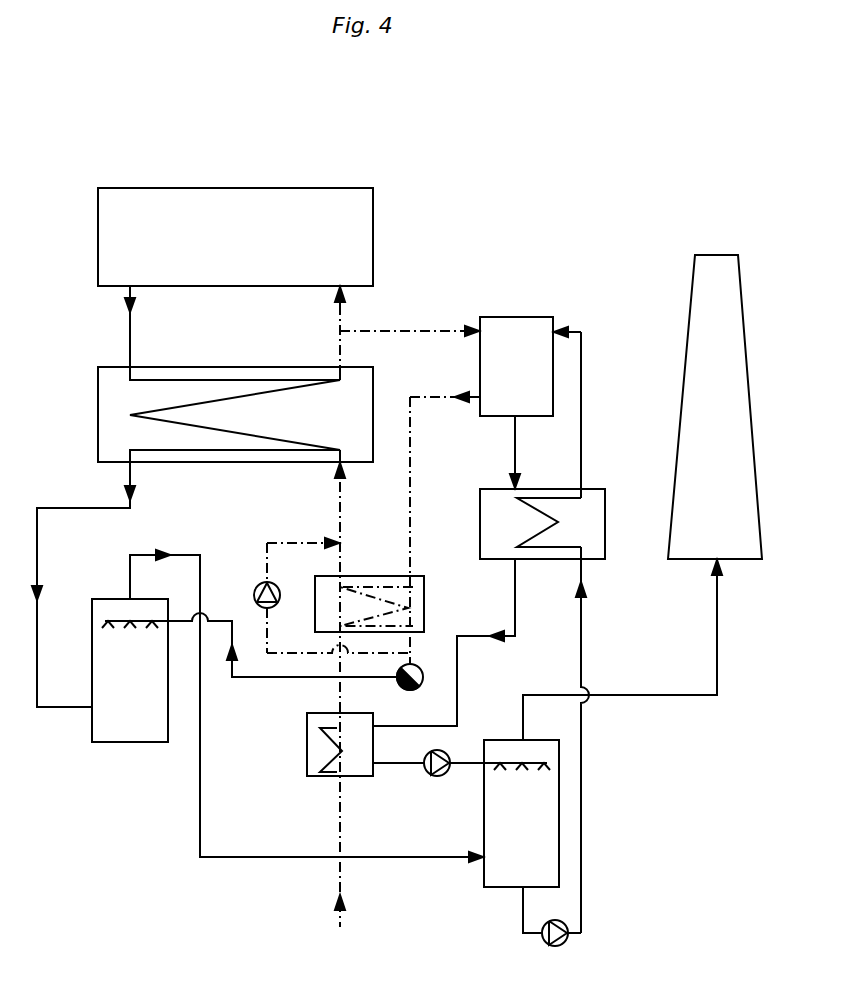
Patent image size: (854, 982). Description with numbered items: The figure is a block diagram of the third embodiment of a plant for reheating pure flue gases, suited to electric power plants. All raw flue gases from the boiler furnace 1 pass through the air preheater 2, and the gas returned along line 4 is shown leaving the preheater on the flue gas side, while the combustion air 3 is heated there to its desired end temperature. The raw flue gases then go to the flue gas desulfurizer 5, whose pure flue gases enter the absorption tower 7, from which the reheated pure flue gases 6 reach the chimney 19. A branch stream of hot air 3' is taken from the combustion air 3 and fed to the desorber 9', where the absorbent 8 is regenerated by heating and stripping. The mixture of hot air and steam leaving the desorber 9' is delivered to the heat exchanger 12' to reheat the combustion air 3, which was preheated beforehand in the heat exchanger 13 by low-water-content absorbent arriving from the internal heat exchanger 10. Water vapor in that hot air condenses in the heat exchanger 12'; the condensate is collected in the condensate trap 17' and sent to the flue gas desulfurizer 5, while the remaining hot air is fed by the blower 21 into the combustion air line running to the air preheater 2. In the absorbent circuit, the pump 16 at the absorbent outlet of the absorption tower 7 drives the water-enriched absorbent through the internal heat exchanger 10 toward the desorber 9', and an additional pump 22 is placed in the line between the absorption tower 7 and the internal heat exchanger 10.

The boiler furnace 1 is at (215, 212).
The air preheater 2 is at (106, 414).
The combustion air 3 is at (359, 606).
The branch stream of hot air 3' is at (410, 317).
The return line 4 is at (128, 327).
The flue gas desulfurizer 5 is at (105, 617).
The reheated flue gases 6 is at (198, 786).
The absorption tower 7 is at (500, 872).
The absorbent 8 is at (583, 433).
The desorber 9' is at (495, 472).
The internal heat exchanger 10 is at (543, 496).
The heat exchanger 12' is at (369, 579).
The heat exchanger 13 is at (315, 746).
The pump 16 is at (545, 941).
The condensate trap 17' is at (319, 644).
The chimney 19 is at (697, 370).
The blower 21 is at (256, 592).
The pump 22 is at (430, 775).